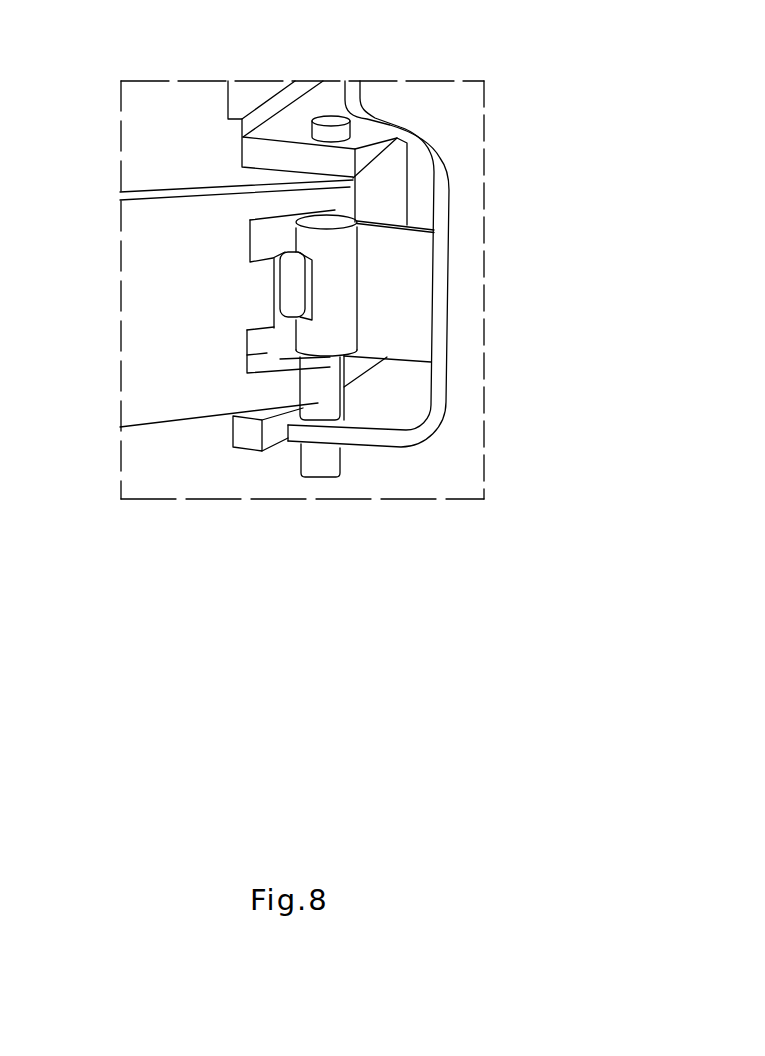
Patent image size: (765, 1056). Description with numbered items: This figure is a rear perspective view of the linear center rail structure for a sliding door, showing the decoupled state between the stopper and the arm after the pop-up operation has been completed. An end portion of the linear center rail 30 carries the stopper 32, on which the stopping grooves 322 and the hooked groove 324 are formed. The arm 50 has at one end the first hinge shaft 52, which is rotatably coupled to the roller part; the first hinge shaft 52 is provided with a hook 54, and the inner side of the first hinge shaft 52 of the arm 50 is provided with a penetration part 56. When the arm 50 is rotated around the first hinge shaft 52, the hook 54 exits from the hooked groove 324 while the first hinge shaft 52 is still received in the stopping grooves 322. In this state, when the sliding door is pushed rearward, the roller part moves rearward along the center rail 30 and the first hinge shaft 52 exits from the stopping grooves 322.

The linear center rail 30 is at (473, 148).
The stopper 32 is at (418, 260).
The stopping grooves 322 is at (342, 340).
The hooked groove 324 is at (310, 274).
The arm 50 is at (198, 213).
The first hinge shaft 52 is at (323, 474).
The hook 54 is at (290, 292).
The penetration part 56 is at (268, 343).